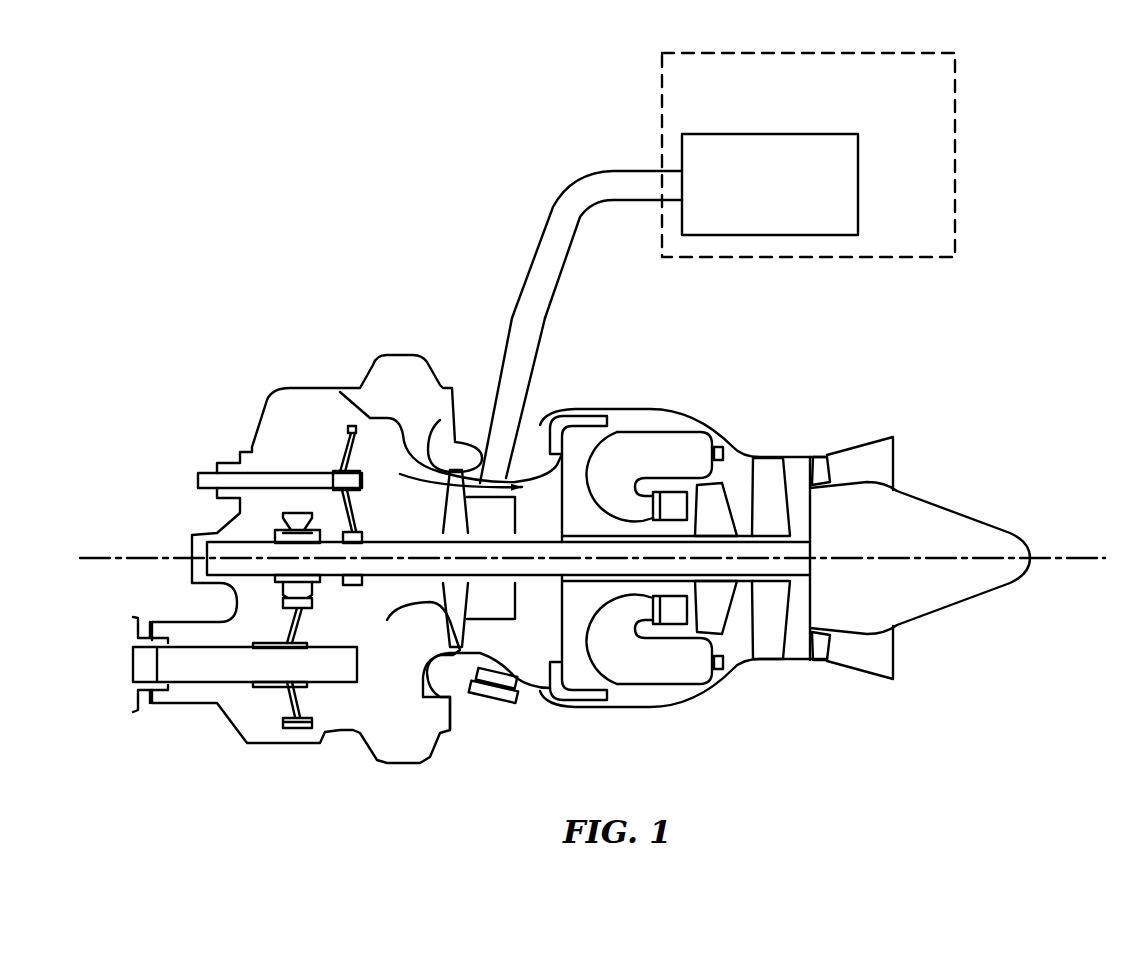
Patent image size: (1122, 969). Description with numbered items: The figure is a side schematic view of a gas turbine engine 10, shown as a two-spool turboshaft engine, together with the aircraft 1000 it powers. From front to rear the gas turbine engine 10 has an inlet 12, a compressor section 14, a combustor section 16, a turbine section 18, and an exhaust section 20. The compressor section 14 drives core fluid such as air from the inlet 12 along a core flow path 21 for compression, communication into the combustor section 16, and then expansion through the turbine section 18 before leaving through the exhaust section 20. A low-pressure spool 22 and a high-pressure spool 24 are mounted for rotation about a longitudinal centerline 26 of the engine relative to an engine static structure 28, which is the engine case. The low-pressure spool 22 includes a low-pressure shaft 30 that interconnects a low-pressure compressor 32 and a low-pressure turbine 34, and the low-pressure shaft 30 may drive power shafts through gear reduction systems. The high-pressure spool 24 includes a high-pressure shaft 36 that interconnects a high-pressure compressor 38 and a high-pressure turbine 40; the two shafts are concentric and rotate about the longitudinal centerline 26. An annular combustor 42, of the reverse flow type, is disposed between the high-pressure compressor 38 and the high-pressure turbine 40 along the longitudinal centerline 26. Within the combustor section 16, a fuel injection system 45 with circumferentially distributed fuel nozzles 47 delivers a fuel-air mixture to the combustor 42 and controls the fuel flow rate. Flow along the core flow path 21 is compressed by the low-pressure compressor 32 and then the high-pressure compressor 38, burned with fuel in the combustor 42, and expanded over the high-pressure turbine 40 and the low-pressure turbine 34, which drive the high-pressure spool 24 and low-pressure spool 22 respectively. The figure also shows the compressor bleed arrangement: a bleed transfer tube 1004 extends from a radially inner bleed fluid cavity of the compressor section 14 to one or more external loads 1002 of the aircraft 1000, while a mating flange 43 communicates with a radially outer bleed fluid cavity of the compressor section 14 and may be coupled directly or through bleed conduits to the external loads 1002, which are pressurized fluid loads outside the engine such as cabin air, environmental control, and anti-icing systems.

The gas turbine engine 10 is at (1007, 390).
The inlet 12 is at (366, 347).
The compressor section 14 is at (468, 664).
The combustor section 16 is at (669, 706).
The turbine section 18 is at (770, 678).
The exhaust section 20 is at (915, 657).
The core flow path 21 is at (403, 475).
The low-pressure spool 22 is at (432, 583).
The high-pressure spool 24 is at (582, 522).
The longitudinal centerline 26 is at (1095, 562).
The engine static structure 28 is at (694, 412).
The low-pressure shaft 30 is at (547, 577).
The low-pressure compressor 32 is at (452, 606).
The low-pressure turbine 34 is at (777, 470).
The high-pressure shaft 36 is at (649, 639).
The high-pressure compressor 38 is at (576, 488).
The high-pressure turbine 40 is at (713, 497).
The combustor 42 is at (640, 675).
The mating flange 43 is at (497, 703).
The fuel injection system 45 is at (728, 677).
The fuel nozzles 47 is at (722, 446).
The aircraft 1000 is at (955, 137).
The external loads 1002 is at (860, 202).
The bleed transfer tube 1004 is at (570, 188).